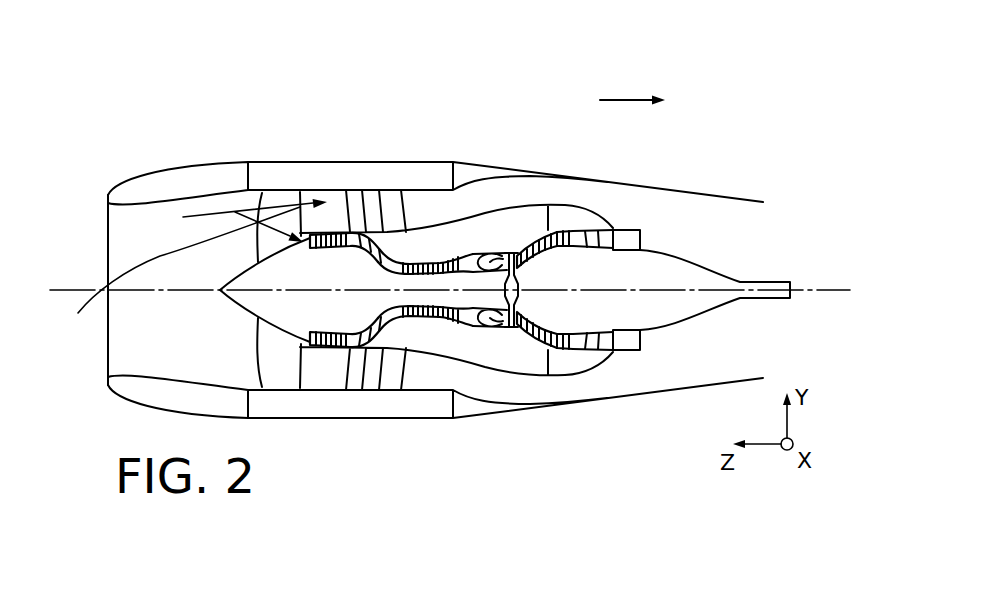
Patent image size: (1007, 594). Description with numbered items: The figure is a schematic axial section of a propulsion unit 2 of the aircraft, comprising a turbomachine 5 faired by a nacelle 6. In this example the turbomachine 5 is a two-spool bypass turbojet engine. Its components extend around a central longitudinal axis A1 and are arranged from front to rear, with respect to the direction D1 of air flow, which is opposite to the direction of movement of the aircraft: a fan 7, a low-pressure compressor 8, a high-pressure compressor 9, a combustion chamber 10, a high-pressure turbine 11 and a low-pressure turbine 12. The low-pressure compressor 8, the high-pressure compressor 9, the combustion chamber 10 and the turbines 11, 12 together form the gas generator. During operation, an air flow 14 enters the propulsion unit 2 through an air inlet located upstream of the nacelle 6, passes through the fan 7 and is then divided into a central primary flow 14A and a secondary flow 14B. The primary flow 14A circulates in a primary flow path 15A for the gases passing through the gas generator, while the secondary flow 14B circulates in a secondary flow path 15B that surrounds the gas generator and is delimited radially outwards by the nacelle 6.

The propulsion unit 2 is at (193, 123).
The turbomachine 5 is at (660, 225).
The nacelle 6 is at (358, 180).
The fan 7 is at (270, 348).
The low-pressure compressor 8 is at (332, 222).
The high-pressure compressor 9 is at (435, 247).
The combustion chamber 10 is at (488, 241).
The high-pressure turbine 11 is at (535, 221).
The low-pressure turbine 12 is at (574, 219).
The air flow 14 is at (190, 217).
The primary flow 14A is at (180, 273).
The secondary flow 14B is at (278, 203).
The primary flow path 15A is at (390, 323).
The secondary flow path 15B is at (510, 387).
The central longitudinal axis A1 is at (60, 287).
The direction of air flow D1 is at (630, 98).